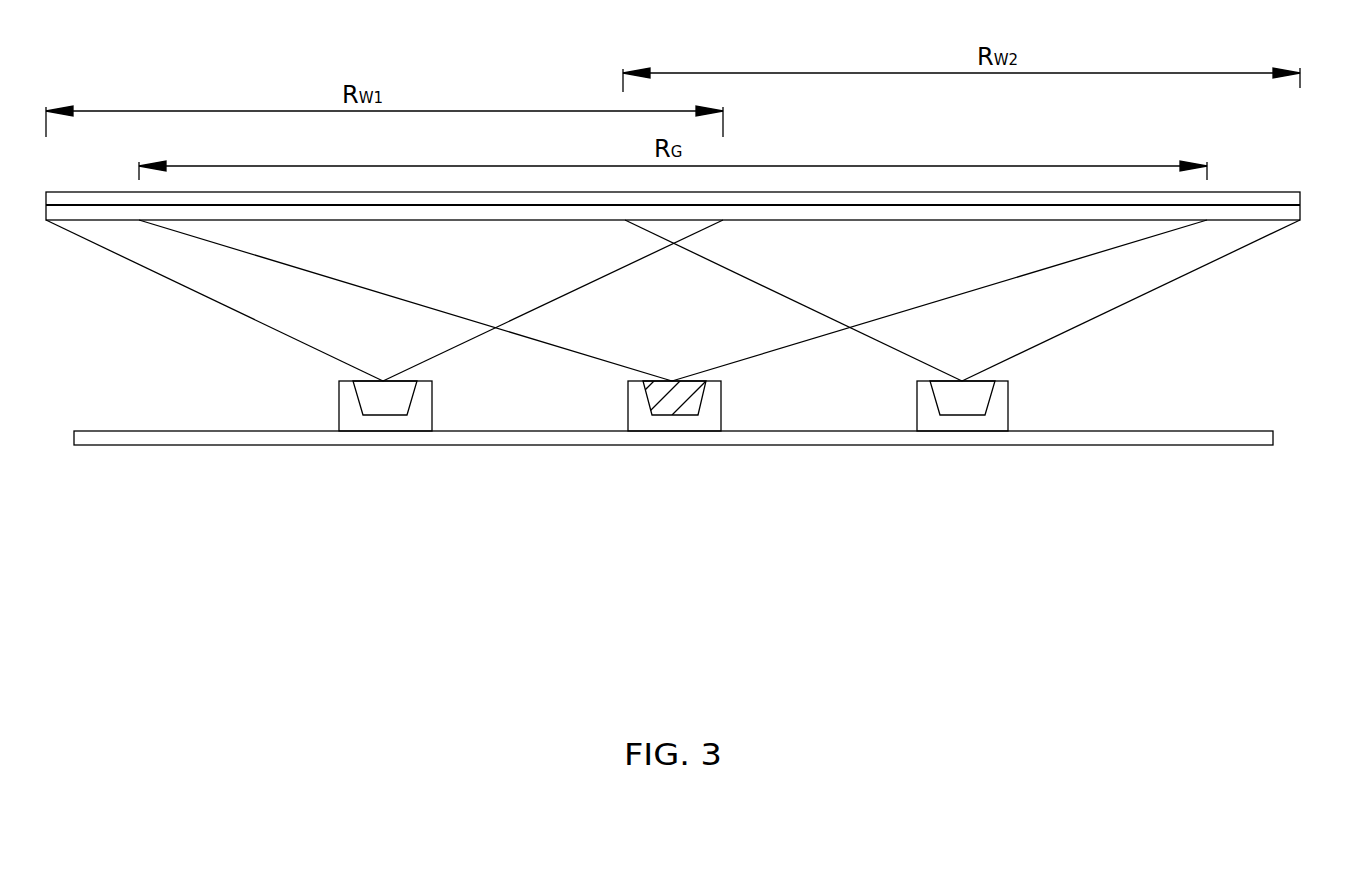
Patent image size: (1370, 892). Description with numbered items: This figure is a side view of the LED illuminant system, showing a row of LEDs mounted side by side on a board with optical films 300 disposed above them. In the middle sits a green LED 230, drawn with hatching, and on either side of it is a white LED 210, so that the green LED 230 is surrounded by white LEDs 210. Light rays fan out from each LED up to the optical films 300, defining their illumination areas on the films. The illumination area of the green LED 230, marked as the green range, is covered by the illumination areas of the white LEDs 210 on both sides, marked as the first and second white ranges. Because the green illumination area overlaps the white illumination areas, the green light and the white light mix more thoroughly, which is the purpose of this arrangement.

The white LED 210 is at (384, 415).
The green LED 230 is at (713, 418).
The optical film 300 is at (1295, 213).